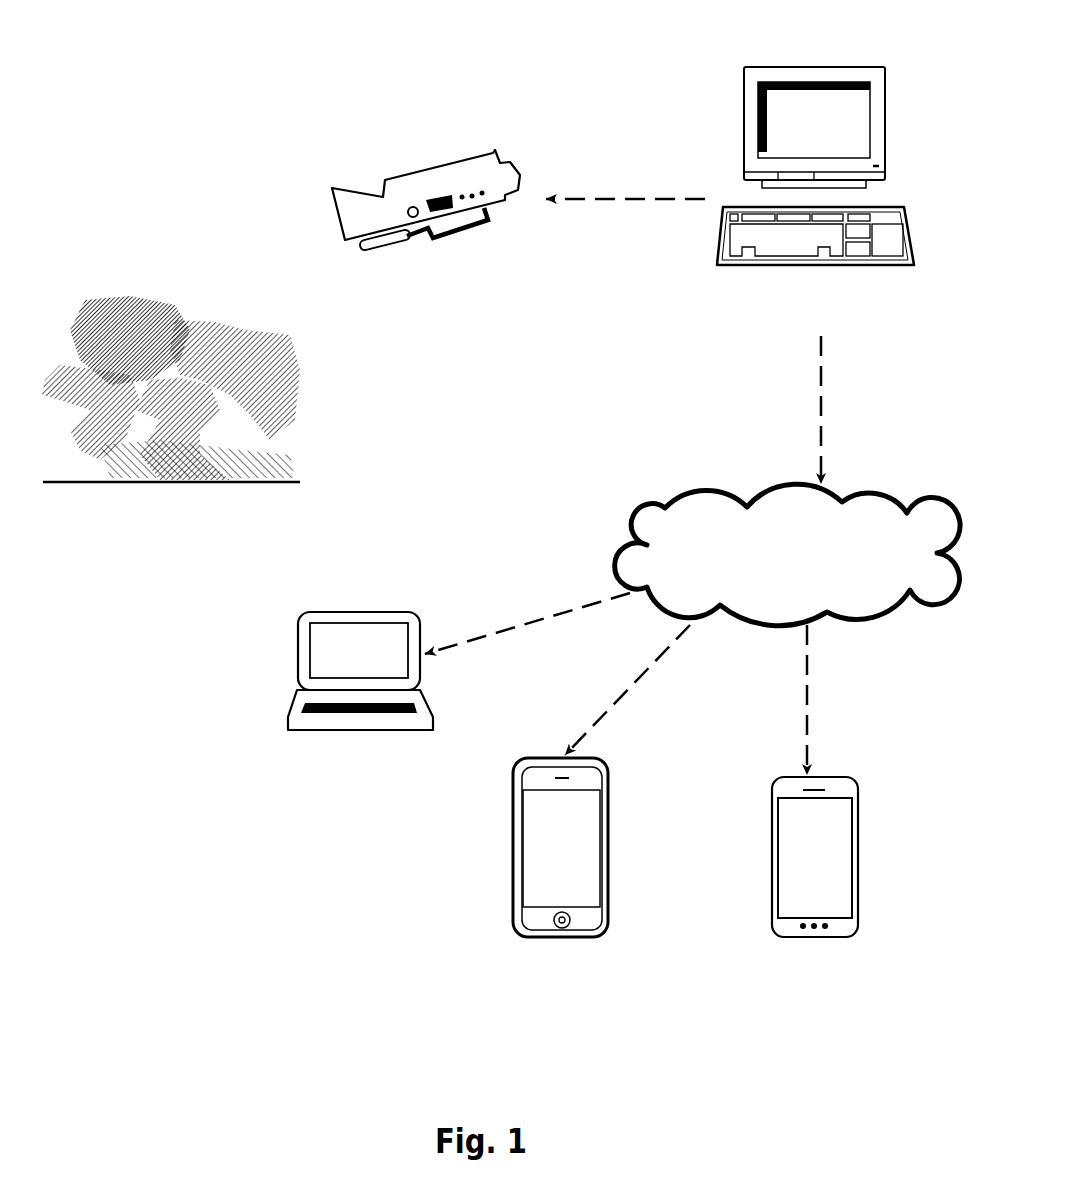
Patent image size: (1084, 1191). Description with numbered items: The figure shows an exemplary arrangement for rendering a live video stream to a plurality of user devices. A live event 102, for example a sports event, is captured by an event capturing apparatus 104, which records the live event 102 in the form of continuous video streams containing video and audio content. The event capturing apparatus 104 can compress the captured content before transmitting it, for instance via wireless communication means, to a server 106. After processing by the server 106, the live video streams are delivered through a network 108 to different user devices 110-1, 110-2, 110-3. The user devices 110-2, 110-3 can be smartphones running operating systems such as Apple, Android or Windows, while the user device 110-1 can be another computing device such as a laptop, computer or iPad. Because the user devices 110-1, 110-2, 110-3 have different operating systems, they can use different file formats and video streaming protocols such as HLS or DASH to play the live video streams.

The live event 102 is at (198, 287).
The event capturing apparatus 104 is at (473, 158).
The server 106 is at (790, 67).
The network 108 is at (630, 530).
The user device 110-1 is at (773, 853).
The user device 110-2 is at (520, 865).
The user device 110-3 is at (288, 707).